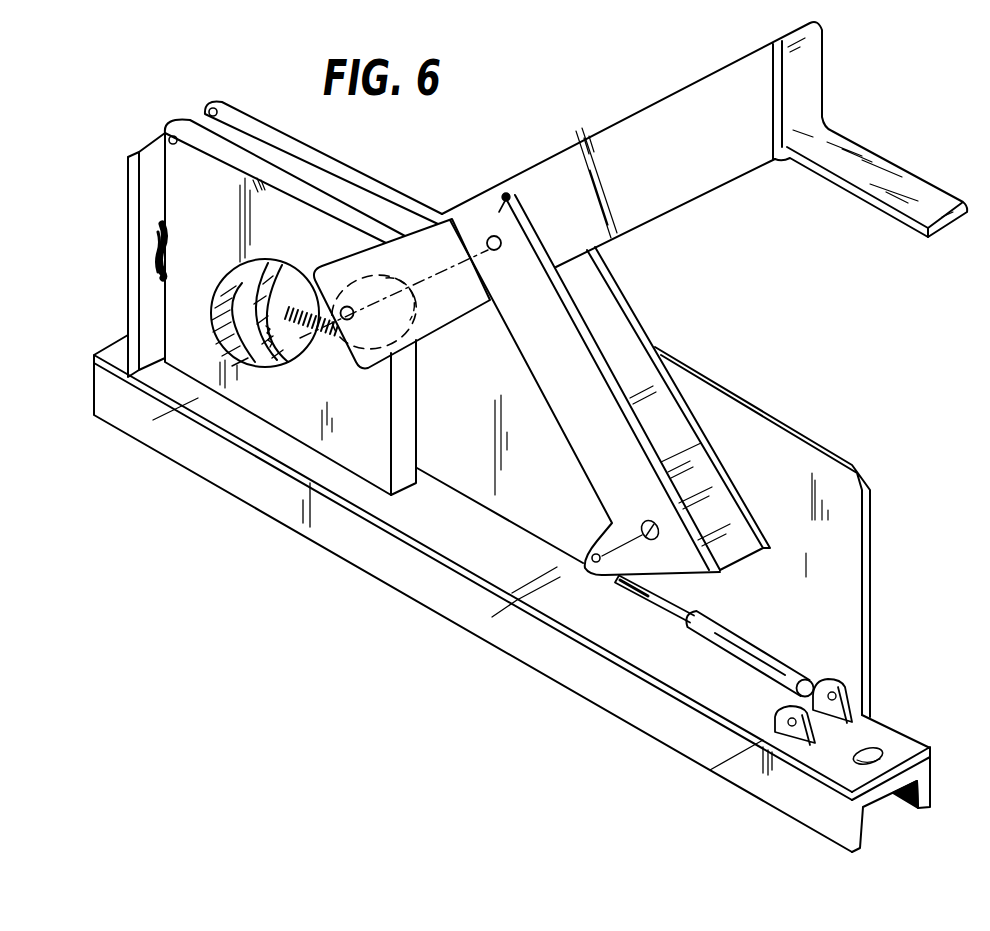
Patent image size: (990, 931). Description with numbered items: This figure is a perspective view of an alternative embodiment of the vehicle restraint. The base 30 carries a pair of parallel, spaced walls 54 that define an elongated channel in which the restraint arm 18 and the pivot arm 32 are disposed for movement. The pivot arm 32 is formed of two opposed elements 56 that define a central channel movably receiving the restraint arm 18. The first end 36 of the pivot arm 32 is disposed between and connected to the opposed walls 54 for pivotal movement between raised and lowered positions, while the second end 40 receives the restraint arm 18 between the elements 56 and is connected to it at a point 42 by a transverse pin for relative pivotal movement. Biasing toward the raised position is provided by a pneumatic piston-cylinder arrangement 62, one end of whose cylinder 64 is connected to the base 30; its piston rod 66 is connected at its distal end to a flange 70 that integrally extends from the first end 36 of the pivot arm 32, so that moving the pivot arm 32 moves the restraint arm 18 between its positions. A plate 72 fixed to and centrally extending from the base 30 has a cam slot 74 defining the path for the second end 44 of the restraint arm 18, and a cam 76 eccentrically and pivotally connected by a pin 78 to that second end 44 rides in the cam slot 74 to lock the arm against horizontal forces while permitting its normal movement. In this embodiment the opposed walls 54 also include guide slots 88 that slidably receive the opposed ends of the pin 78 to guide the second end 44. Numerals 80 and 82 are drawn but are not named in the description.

The restraint arm 18 is at (687, 188).
The base 30 is at (613, 697).
The pivot arm 32 is at (566, 423).
The first end of pivot arm 36 is at (743, 550).
The second end of pivot arm 40 is at (513, 192).
The connection point 42 is at (494, 250).
The second end of restraint arm 44 is at (358, 370).
The walls 54 is at (777, 418).
The opposed elements 56 is at (534, 360).
The piston-cylinder arrangement 62 is at (762, 643).
The cylinder 64 is at (812, 683).
The piston rod 66 is at (663, 602).
The flange 70 is at (596, 552).
The plate 72 is at (416, 417).
The cam slot 74 is at (285, 280).
The cam 76 is at (395, 278).
The pin 78 is at (412, 283).
The hand wheel 80 is at (224, 287).
The threaded shaft 82 is at (296, 338).
The guide slots 88 is at (250, 278).